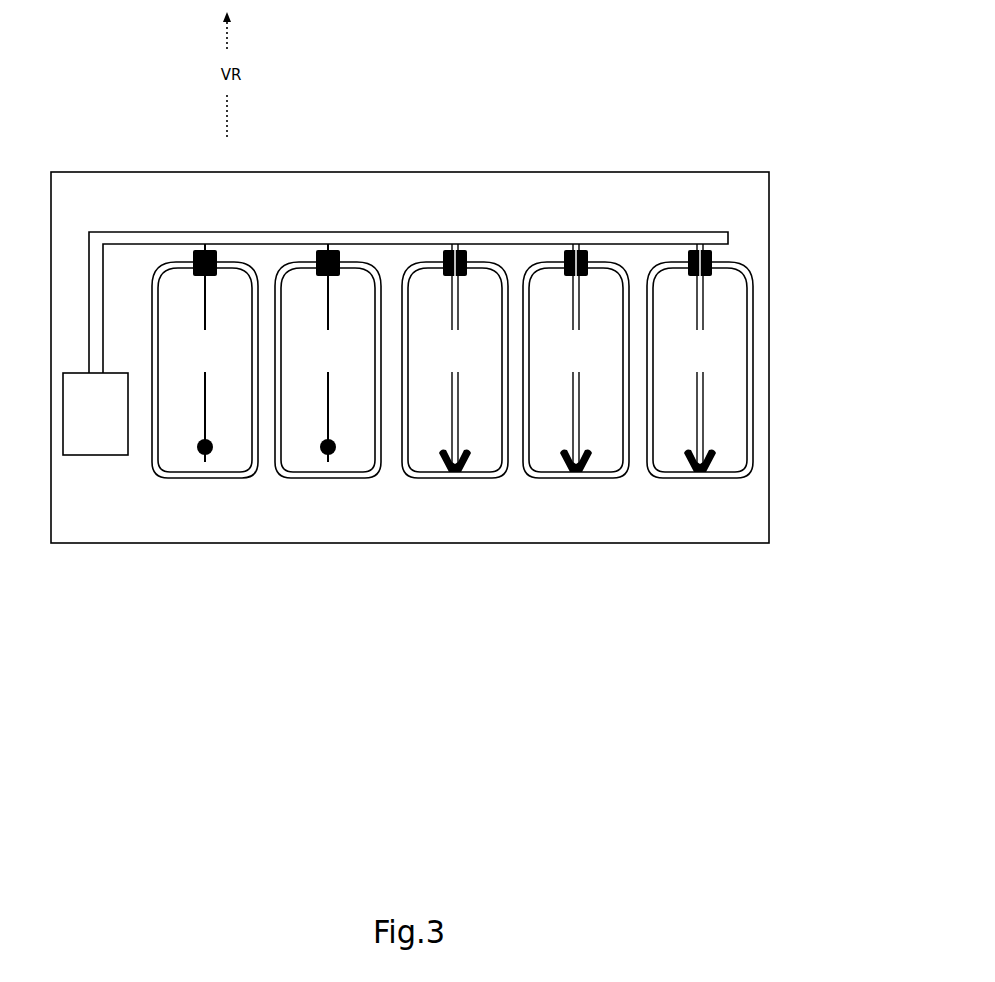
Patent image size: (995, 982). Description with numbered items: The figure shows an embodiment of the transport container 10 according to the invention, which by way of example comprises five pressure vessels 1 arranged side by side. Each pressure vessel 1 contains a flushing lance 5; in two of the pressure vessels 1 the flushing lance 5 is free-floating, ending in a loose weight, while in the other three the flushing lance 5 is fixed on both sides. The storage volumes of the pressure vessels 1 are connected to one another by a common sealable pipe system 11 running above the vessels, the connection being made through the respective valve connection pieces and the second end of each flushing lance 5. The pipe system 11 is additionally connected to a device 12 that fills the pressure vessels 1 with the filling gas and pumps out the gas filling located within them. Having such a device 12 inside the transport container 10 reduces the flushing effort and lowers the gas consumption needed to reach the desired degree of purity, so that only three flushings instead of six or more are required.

The pressure vessel 1 is at (205, 486).
The flushing lance 5 is at (705, 363).
The transport container 10 is at (591, 105).
The pipe system 11 is at (370, 234).
The device for filling the pressure vessels with filling gas and for pumping out the 12 is at (87, 423).